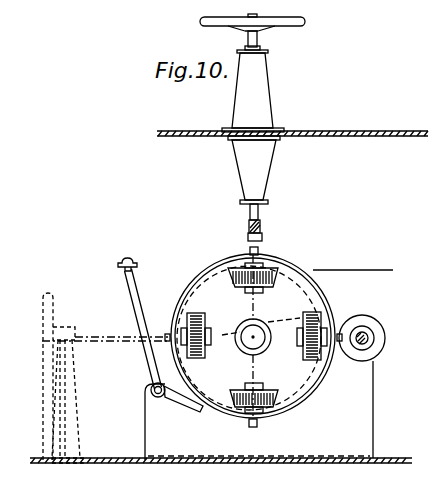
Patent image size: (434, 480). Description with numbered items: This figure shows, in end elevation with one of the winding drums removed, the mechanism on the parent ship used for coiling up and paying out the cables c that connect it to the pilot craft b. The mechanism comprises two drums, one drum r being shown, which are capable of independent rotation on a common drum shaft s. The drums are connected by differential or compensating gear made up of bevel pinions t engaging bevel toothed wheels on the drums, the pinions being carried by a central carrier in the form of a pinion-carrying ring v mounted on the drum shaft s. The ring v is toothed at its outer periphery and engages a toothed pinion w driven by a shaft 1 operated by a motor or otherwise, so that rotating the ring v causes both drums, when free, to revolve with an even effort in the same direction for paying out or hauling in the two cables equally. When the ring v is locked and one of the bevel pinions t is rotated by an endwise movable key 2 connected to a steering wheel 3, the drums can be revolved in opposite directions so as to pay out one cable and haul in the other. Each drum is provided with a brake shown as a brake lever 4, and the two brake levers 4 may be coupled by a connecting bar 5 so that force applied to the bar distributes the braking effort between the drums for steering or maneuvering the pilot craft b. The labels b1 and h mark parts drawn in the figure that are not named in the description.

The steering wheel 3 is at (38, 372).
The pilot craft b is at (234, 149).
The supporting plate b1 is at (292, 119).
The endwise movable key 2 is at (259, 231).
The connecting bar 5 is at (117, 268).
The brake lever 4 is at (148, 358).
The pin h is at (167, 333).
The bevel pinions t is at (195, 322).
The pinion-carrying ring v is at (290, 296).
The drum shaft s is at (250, 345).
The drum r is at (308, 378).
The toothed pinion w is at (362, 376).
The shaft 1 is at (364, 337).
The cable c is at (353, 259).